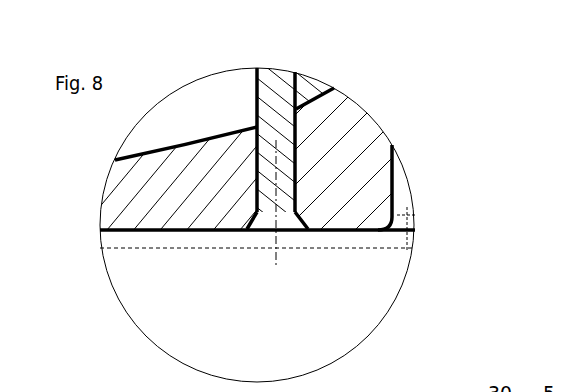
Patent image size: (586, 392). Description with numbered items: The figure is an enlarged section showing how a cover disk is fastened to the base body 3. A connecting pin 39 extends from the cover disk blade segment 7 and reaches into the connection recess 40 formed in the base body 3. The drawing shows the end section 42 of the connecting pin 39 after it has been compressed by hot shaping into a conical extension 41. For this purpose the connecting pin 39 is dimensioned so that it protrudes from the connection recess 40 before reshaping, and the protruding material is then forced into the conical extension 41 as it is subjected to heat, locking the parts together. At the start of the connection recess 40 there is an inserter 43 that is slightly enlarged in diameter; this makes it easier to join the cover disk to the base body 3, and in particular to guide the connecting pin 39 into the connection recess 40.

The base body 3 is at (143, 205).
The cover disk blade segment 7 is at (242, 111).
The connecting pin 39 is at (280, 170).
The connection recess 40 is at (257, 211).
The conical extension 41 is at (278, 220).
The end section 42 is at (300, 221).
The inserter 43 is at (297, 135).